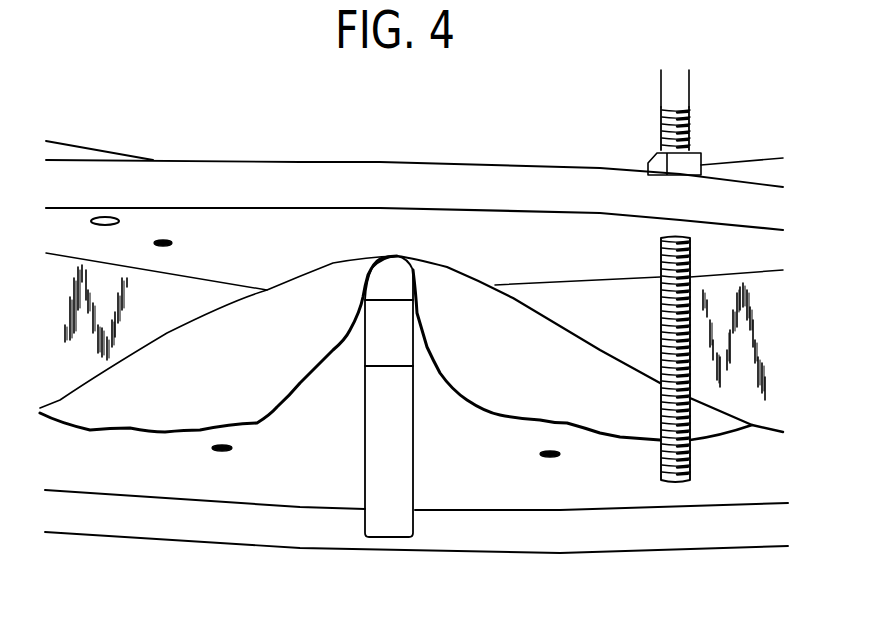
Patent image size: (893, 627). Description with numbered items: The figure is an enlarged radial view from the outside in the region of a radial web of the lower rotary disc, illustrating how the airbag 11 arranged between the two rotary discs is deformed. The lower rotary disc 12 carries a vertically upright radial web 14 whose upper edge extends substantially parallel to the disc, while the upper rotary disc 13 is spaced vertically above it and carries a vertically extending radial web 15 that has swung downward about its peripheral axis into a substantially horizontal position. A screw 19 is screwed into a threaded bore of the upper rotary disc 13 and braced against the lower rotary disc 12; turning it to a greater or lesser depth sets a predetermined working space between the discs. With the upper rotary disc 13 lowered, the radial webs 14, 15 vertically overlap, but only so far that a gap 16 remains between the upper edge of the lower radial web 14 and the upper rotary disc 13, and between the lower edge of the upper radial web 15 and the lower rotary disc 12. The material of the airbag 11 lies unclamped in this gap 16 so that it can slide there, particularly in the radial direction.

The airbag 11 is at (620, 437).
The lower rotary disc 12 is at (757, 527).
The upper rotary disc 13 is at (757, 207).
The radial web 14 is at (407, 475).
The radial web 15 is at (747, 380).
The gap 16 is at (398, 241).
The screw 19 is at (690, 338).